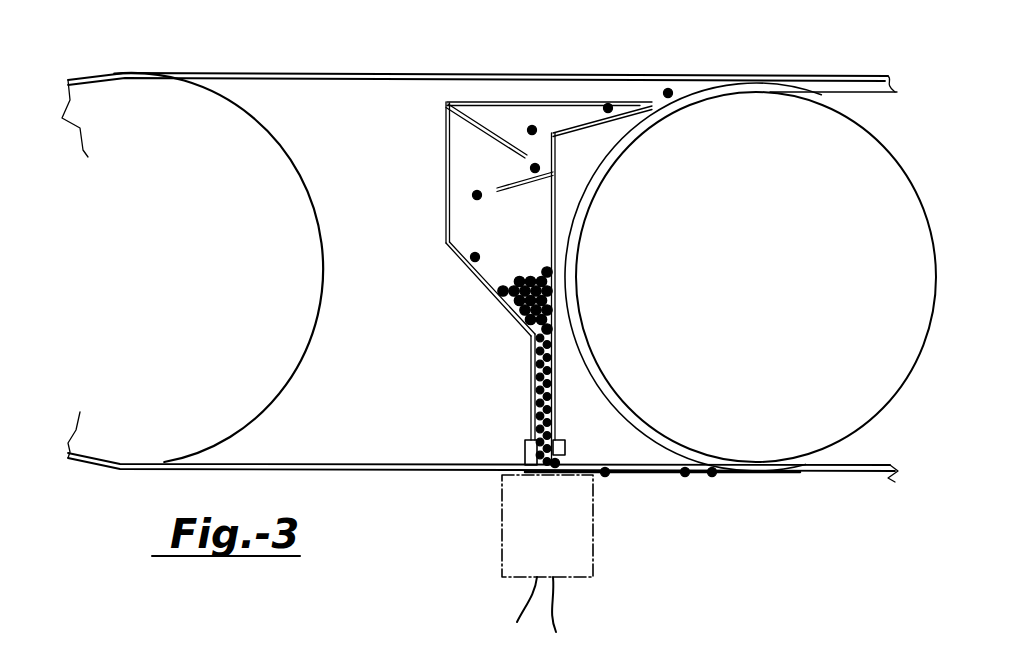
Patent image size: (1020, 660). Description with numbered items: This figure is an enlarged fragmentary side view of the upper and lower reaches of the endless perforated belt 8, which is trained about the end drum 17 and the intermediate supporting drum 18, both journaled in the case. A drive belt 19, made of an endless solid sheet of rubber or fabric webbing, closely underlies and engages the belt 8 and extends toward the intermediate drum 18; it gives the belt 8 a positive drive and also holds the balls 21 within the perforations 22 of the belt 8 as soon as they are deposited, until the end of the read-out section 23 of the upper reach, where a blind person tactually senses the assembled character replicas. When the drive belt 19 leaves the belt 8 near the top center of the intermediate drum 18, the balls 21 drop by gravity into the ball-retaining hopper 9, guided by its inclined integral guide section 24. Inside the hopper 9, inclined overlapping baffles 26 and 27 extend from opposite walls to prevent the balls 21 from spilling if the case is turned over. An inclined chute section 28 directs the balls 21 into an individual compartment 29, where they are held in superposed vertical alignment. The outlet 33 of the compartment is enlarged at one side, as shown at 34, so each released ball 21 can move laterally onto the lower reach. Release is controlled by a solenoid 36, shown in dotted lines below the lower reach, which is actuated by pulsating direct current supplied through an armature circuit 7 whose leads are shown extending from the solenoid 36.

The armature circuit 7 is at (518, 612).
The endless perforated belt 8 is at (520, 74).
The ball-retaining hopper 9 is at (444, 177).
The end drum 17 is at (292, 365).
The intermediate supporting drum 18 is at (893, 392).
The drive belt 19 is at (606, 396).
The balls 21 is at (610, 104).
The perforations 22 is at (658, 472).
The read-out section 23 is at (850, 77).
The inclined integral guide section 24 is at (603, 111).
The inclined overlapping baffle 26 is at (462, 112).
The inclined overlapping baffle 27 is at (522, 192).
The inclined chute section 28 is at (456, 250).
The compartment 29 is at (531, 389).
The outlet 33 is at (524, 463).
The enlarged outlet side 34 is at (566, 456).
The solenoid 36 is at (502, 513).